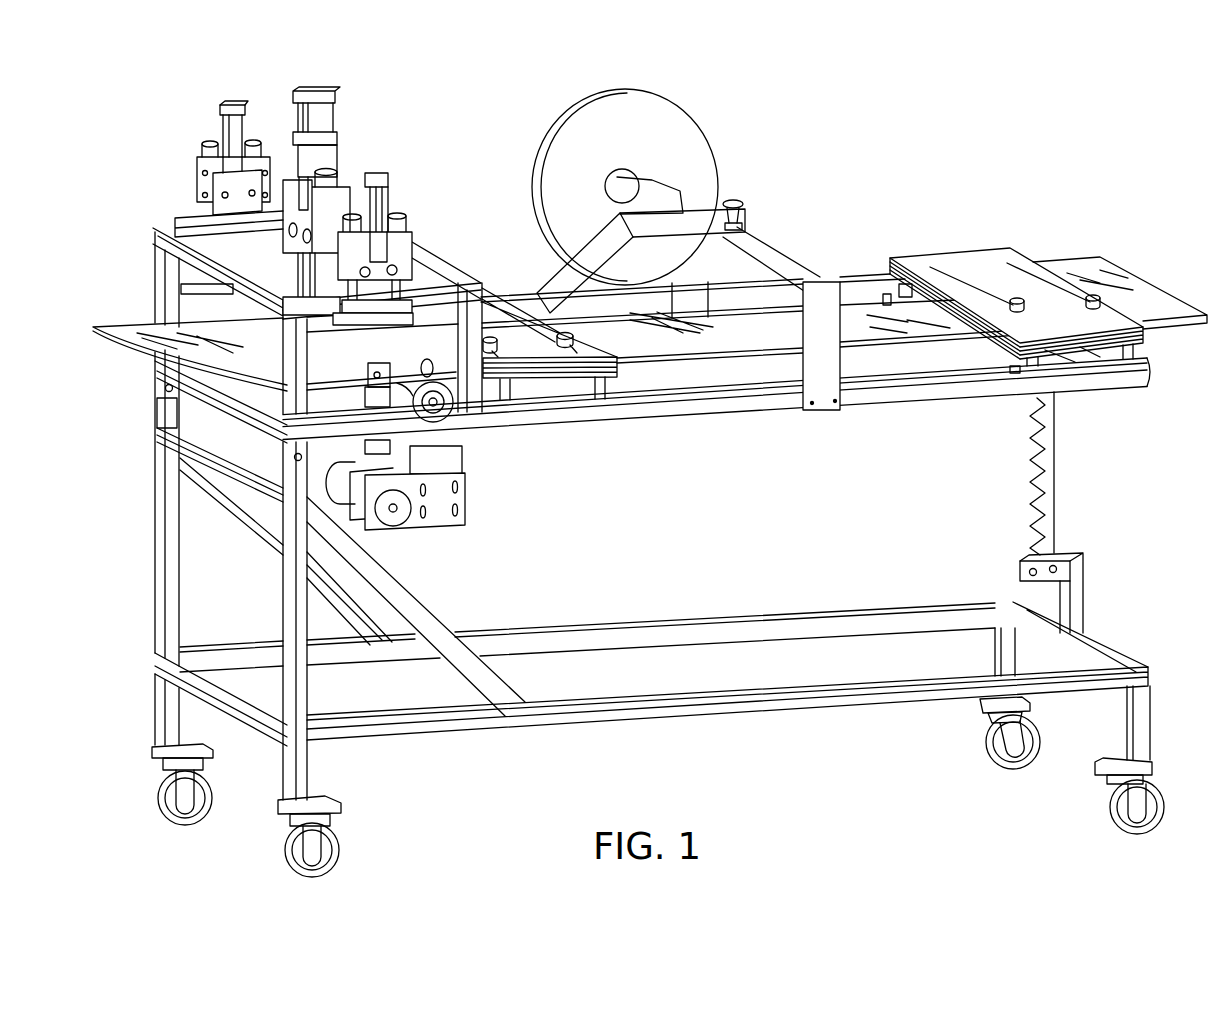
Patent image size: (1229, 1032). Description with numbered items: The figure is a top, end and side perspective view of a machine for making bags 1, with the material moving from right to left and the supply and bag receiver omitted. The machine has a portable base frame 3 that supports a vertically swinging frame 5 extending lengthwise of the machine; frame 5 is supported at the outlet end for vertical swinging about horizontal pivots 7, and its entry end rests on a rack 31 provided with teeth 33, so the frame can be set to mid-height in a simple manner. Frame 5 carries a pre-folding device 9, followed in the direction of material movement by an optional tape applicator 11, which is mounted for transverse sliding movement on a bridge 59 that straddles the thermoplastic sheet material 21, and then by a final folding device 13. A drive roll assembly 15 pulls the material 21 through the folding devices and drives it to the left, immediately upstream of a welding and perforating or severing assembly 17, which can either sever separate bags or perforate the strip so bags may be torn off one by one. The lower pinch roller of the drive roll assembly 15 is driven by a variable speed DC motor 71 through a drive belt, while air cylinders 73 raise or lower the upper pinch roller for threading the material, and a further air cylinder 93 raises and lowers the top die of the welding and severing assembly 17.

The machine for making bags 1 is at (950, 130).
The base frame 3 is at (590, 638).
The vertically swinging frame 5 is at (887, 400).
The horizontal pivots 7 is at (164, 389).
The pre-folding device 9 is at (980, 258).
The tape applicator 11 is at (688, 130).
The final folding device 13 is at (484, 292).
The drive roll assembly 15 is at (443, 404).
The welding and perforating or severing assembly 17 is at (392, 388).
The thermoplastic sheet material 21 is at (1128, 283).
The rack 31 is at (1047, 477).
The teeth 33 is at (1032, 508).
The bridge 59 is at (776, 262).
The variable speed DC motor 71 is at (349, 481).
The air cylinders 73 is at (230, 130).
The air cylinder 93 is at (327, 123).